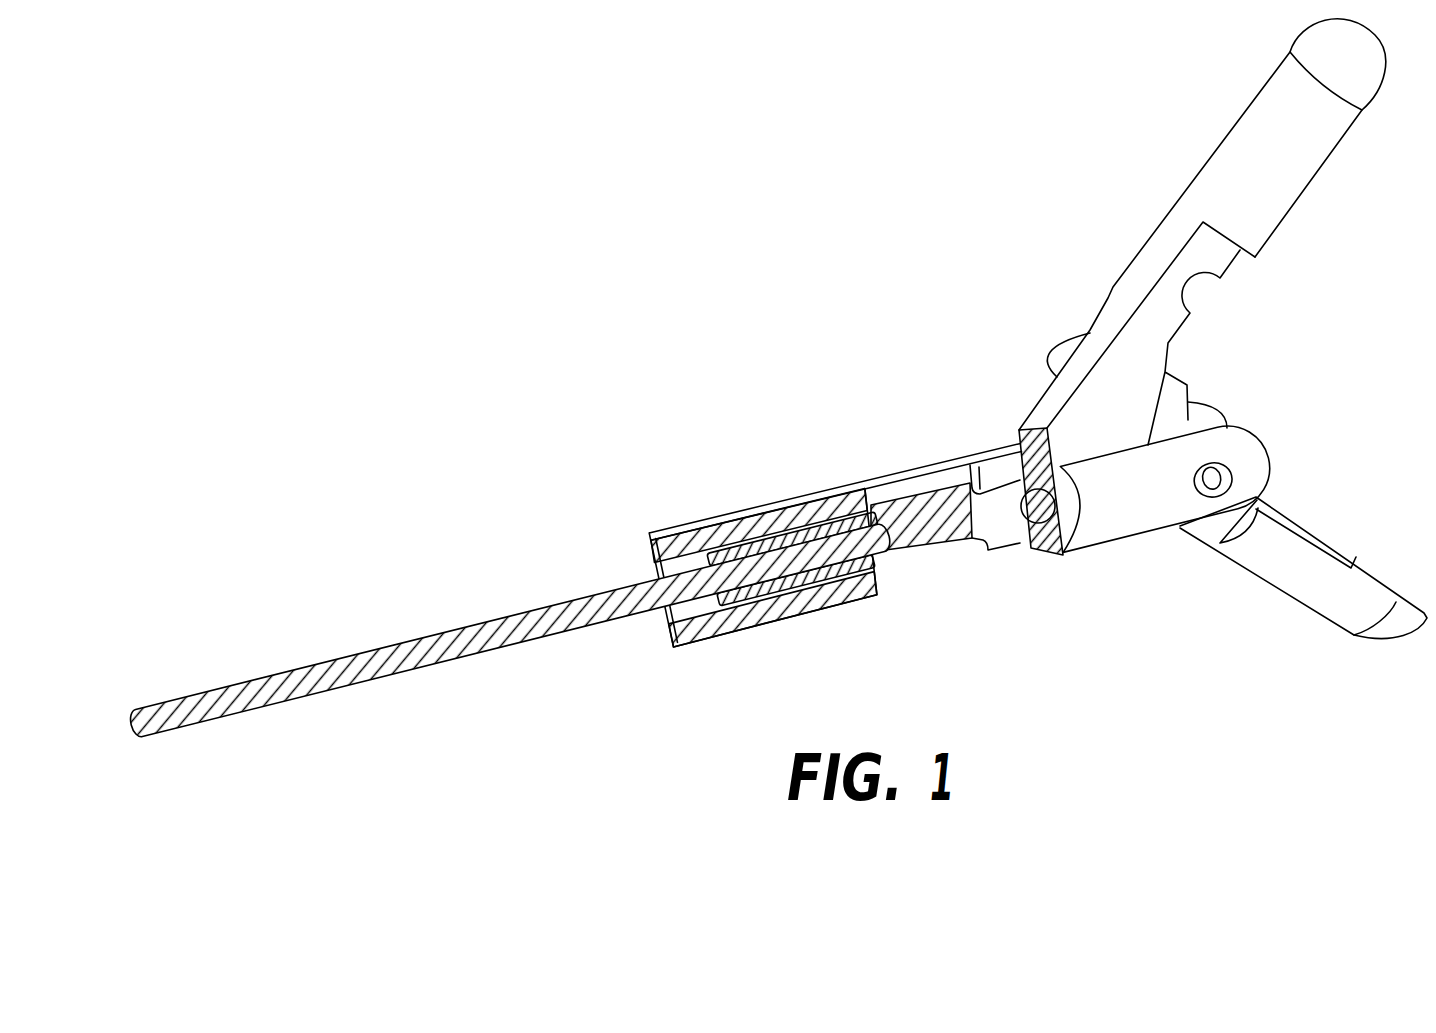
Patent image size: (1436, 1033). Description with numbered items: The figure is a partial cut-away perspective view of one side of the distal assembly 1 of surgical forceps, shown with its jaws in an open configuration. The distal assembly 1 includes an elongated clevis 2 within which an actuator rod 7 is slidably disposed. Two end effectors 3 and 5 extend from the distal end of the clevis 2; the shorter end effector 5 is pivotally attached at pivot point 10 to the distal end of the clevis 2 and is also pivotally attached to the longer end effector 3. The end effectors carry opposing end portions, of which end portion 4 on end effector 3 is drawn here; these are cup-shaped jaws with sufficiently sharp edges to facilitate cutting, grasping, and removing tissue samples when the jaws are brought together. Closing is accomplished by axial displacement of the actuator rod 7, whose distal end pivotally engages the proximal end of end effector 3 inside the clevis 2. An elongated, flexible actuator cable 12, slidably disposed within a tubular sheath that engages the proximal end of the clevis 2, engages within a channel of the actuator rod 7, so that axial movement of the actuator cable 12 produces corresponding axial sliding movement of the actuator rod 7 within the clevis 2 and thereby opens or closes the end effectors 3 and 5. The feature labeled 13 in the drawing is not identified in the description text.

The distal assembly 1 is at (730, 500).
The clevis 2 is at (838, 492).
The end effector 3 is at (1317, 183).
The end portion 4 is at (1266, 110).
The end effector 5 is at (1277, 577).
The actuator rod 7 is at (932, 518).
The pivot point 10 is at (1224, 462).
The actuator cable 12 is at (481, 621).
The stop 13 is at (971, 541).